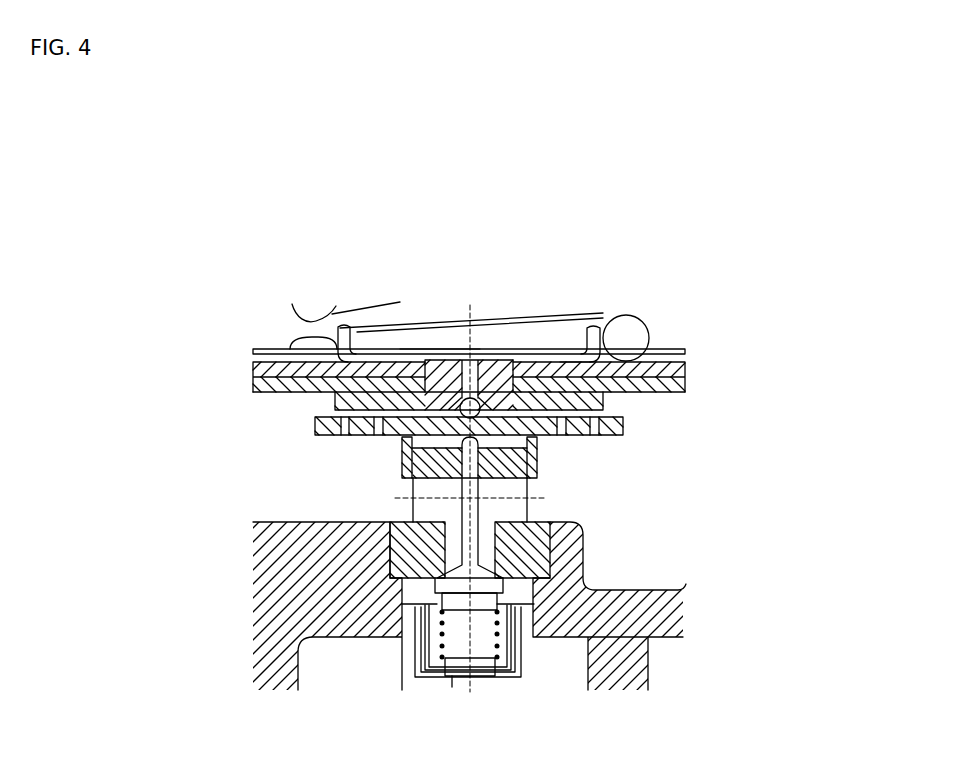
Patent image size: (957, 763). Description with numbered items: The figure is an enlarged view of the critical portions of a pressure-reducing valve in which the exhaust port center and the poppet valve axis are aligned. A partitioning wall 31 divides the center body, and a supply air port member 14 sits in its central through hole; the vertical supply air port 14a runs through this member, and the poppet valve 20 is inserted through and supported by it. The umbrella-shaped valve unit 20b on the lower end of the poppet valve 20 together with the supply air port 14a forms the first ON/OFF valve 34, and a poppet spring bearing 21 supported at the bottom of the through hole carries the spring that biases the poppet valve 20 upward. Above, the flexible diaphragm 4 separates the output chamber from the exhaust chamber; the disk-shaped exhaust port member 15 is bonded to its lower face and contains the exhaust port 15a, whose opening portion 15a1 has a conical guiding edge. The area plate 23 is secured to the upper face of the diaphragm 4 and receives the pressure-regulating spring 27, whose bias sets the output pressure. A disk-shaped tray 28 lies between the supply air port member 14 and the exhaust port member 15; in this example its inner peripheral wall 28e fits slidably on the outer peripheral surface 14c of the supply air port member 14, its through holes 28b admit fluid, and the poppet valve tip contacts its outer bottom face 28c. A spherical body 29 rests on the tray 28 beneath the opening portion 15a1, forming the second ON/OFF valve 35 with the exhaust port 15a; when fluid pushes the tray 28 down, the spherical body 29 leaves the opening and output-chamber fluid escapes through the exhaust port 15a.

The diaphragm 4 is at (253, 362).
The exhaust port member 15 is at (306, 360).
The opening portion 15a1 is at (445, 355).
The second ON/OFF valve 35 is at (471, 276).
The exhaust port 15a is at (505, 350).
The spherical body 29 is at (550, 348).
The pressure-regulating spring 27 is at (626, 332).
The area plate 23 is at (685, 352).
The through holes 28b is at (335, 414).
The tray 28 is at (626, 417).
The outer peripheral surface 14c is at (400, 449).
The inner peripheral wall 28e is at (408, 480).
The outer bottom face 28c is at (577, 437).
The supply air port member 14 is at (397, 520).
The poppet valve 20 is at (470, 515).
The partitioning wall 31 is at (280, 590).
The supply air port 14a is at (653, 640).
The valve unit 20b is at (437, 583).
The poppet spring bearing 21 is at (497, 653).
The first ON/OFF valve 34 is at (516, 642).